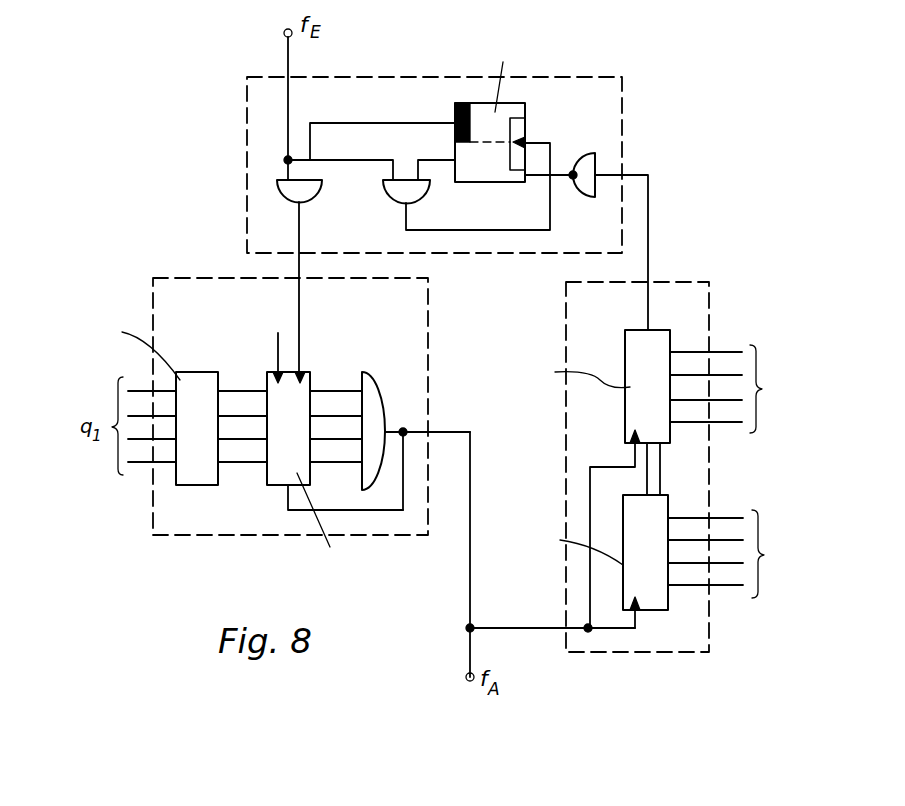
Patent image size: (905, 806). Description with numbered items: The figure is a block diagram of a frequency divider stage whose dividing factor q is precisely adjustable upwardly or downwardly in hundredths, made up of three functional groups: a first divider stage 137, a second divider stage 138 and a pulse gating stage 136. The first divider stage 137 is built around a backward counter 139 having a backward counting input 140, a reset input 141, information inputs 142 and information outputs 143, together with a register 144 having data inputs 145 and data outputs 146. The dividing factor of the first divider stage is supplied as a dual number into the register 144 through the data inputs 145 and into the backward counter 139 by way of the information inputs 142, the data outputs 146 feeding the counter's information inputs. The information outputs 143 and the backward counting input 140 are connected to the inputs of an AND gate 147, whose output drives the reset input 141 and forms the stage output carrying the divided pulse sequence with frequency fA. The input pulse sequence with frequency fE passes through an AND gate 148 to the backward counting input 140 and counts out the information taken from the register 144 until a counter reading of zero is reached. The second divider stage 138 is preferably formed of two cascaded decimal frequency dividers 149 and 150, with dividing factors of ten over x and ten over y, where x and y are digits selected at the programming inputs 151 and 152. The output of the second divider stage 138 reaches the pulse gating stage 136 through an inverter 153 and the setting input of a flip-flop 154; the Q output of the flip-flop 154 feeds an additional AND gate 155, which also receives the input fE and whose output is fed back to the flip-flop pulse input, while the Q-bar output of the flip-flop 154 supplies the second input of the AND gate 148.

The pulse gating stage 136 is at (600, 115).
The first divider stage 137 is at (413, 375).
The second divider stage 138 is at (660, 296).
The backward counter 139 is at (297, 403).
The backward counting input 140 is at (301, 368).
The reset input 141 is at (283, 488).
The information inputs 142 is at (263, 432).
The information outputs 143 is at (310, 432).
The register 144 is at (191, 386).
The data inputs 145 is at (173, 430).
The data outputs 146 is at (228, 427).
The AND gate 147 is at (374, 392).
The AND gate 148 is at (312, 200).
The decimal frequency divider 149 is at (652, 592).
The decimal frequency divider 150 is at (637, 355).
The programming inputs 151 is at (673, 552).
The programming inputs 152 is at (677, 388).
The inverter 153 is at (583, 180).
The flip-flop 154 is at (518, 113).
The AND gate 155 is at (417, 200).